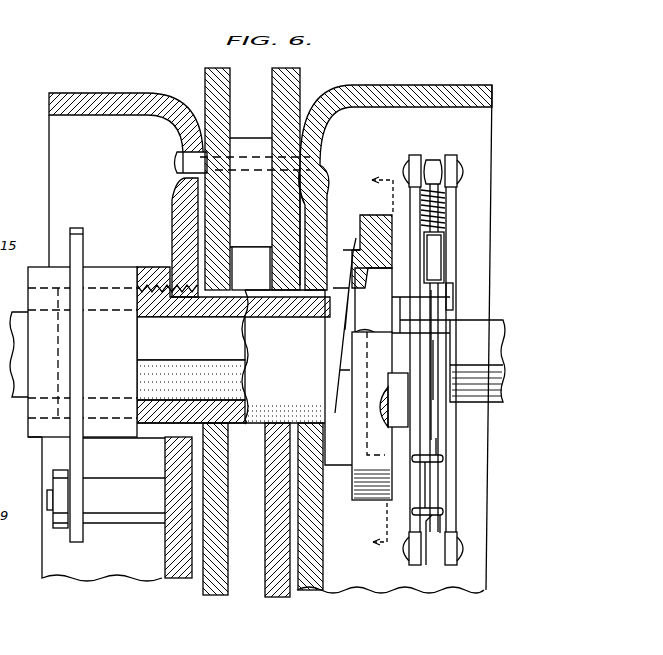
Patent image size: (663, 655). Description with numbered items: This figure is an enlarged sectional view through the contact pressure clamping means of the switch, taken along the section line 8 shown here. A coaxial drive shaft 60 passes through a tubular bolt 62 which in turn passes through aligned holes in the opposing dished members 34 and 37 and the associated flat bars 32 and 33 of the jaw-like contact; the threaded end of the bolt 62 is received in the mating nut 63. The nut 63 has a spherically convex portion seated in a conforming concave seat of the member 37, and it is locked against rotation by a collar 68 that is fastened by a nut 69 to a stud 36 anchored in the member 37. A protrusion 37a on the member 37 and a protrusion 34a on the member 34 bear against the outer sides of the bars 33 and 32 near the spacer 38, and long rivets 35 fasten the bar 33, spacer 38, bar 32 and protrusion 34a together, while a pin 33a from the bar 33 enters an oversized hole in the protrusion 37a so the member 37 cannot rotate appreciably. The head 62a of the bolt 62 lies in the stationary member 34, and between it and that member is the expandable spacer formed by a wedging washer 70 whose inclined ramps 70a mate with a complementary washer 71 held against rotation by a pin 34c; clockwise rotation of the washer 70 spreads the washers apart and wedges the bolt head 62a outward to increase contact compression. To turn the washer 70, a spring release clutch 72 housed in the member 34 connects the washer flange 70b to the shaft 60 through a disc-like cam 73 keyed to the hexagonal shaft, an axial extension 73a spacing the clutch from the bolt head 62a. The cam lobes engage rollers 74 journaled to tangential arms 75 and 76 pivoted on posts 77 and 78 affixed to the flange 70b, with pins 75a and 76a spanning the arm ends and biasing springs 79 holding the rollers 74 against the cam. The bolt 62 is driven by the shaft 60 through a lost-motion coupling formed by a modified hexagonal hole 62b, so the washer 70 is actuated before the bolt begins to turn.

The section line 8- 8 is at (371, 362).
The flat bar 32 is at (300, 82).
The flat bar 33 is at (205, 80).
The pin 33a is at (177, 160).
The dished member 34 is at (444, 96).
The protrusion 34a is at (300, 182).
The pin 34c is at (304, 269).
The long rivet 35 is at (318, 185).
The stud 36 is at (47, 494).
The dished member 37 is at (82, 102).
The protrusion 37a is at (180, 182).
The spacer 38 is at (247, 146).
The drive shaft 60 is at (17, 396).
The tubular bolt 62 is at (258, 418).
The bolt head 62a is at (373, 309).
The modified hexagonal hole 62b is at (170, 318).
The nut 63 is at (108, 270).
The collar 68 is at (77, 228).
The nut 69 is at (60, 530).
The wedging means 70 is at (370, 218).
The ramps 70a is at (342, 378).
The washer flange 70b is at (366, 500).
The washer 71 is at (350, 252).
The spring release clutch 72 is at (438, 360).
The cam 73 is at (432, 333).
The axial extension 73a is at (432, 354).
The roller 74 is at (431, 264).
The arm 75 is at (447, 231).
The pin 75a is at (432, 158).
The arm 76 is at (444, 526).
The pin 76a is at (430, 566).
The post 77 is at (396, 383).
The post 78 is at (446, 300).
The biasing spring 79 is at (441, 213).